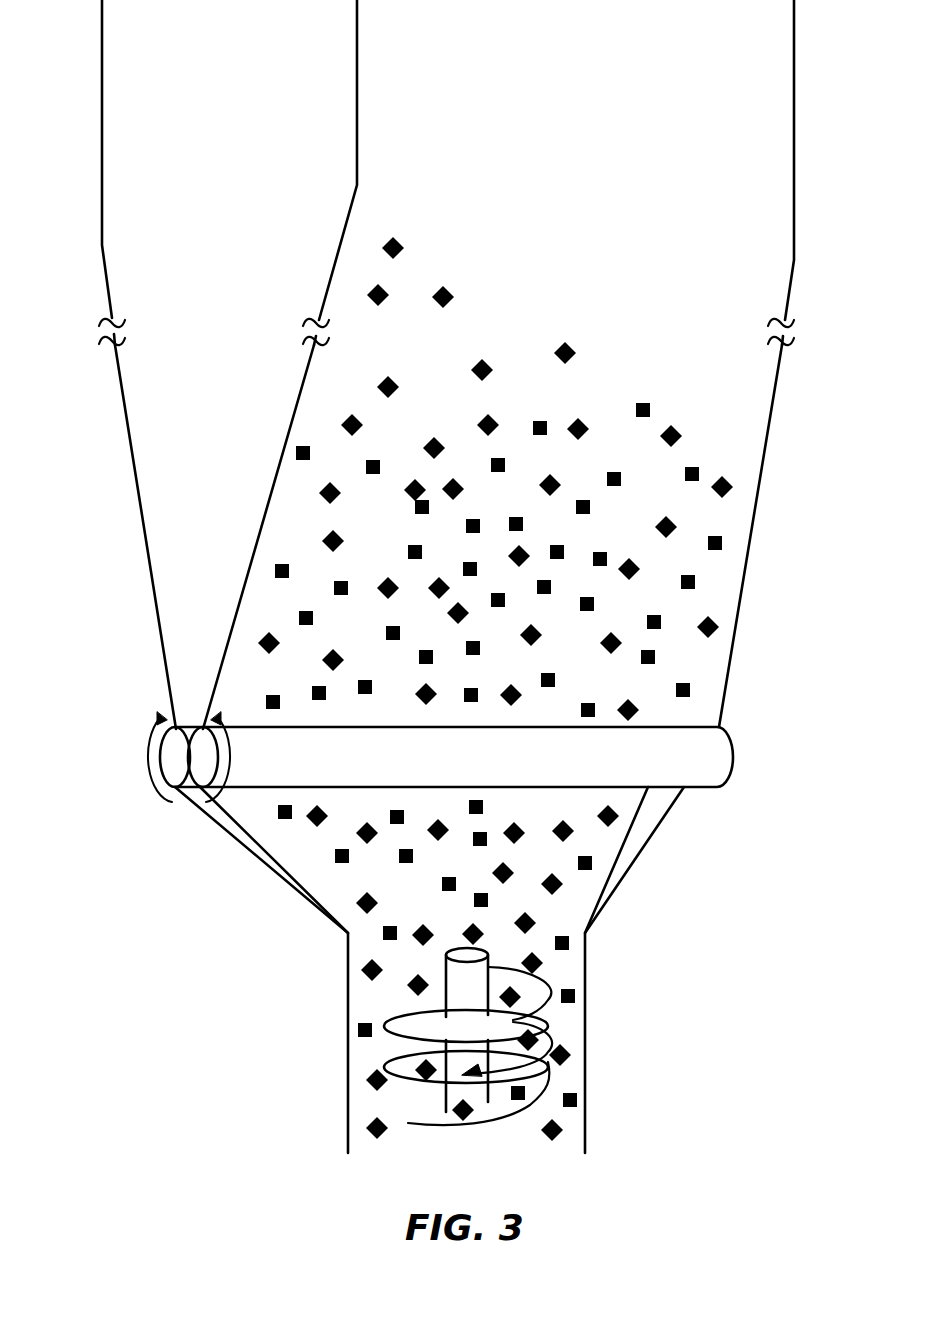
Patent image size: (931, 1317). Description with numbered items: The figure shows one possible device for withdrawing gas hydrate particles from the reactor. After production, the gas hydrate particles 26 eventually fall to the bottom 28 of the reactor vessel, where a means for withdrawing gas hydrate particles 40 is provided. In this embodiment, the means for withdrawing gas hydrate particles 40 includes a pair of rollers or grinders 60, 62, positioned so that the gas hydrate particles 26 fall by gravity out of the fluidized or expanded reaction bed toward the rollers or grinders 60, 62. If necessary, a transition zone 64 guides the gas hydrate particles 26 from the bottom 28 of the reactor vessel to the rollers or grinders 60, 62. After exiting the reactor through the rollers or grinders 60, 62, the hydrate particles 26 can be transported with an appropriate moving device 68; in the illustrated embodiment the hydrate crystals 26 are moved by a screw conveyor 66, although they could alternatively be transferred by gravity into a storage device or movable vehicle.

The bottom of the reactor vessel 28 is at (446, 172).
The gas hydrate particles 26 is at (404, 251).
The transition zone 64 is at (214, 537).
The roller or grinder 62 is at (169, 757).
The roller or grinder 60 is at (209, 757).
The means for withdrawing gas hydrate particles 40 is at (733, 747).
The screw conveyor 66 is at (408, 1080).
The moving device 68 is at (586, 1028).